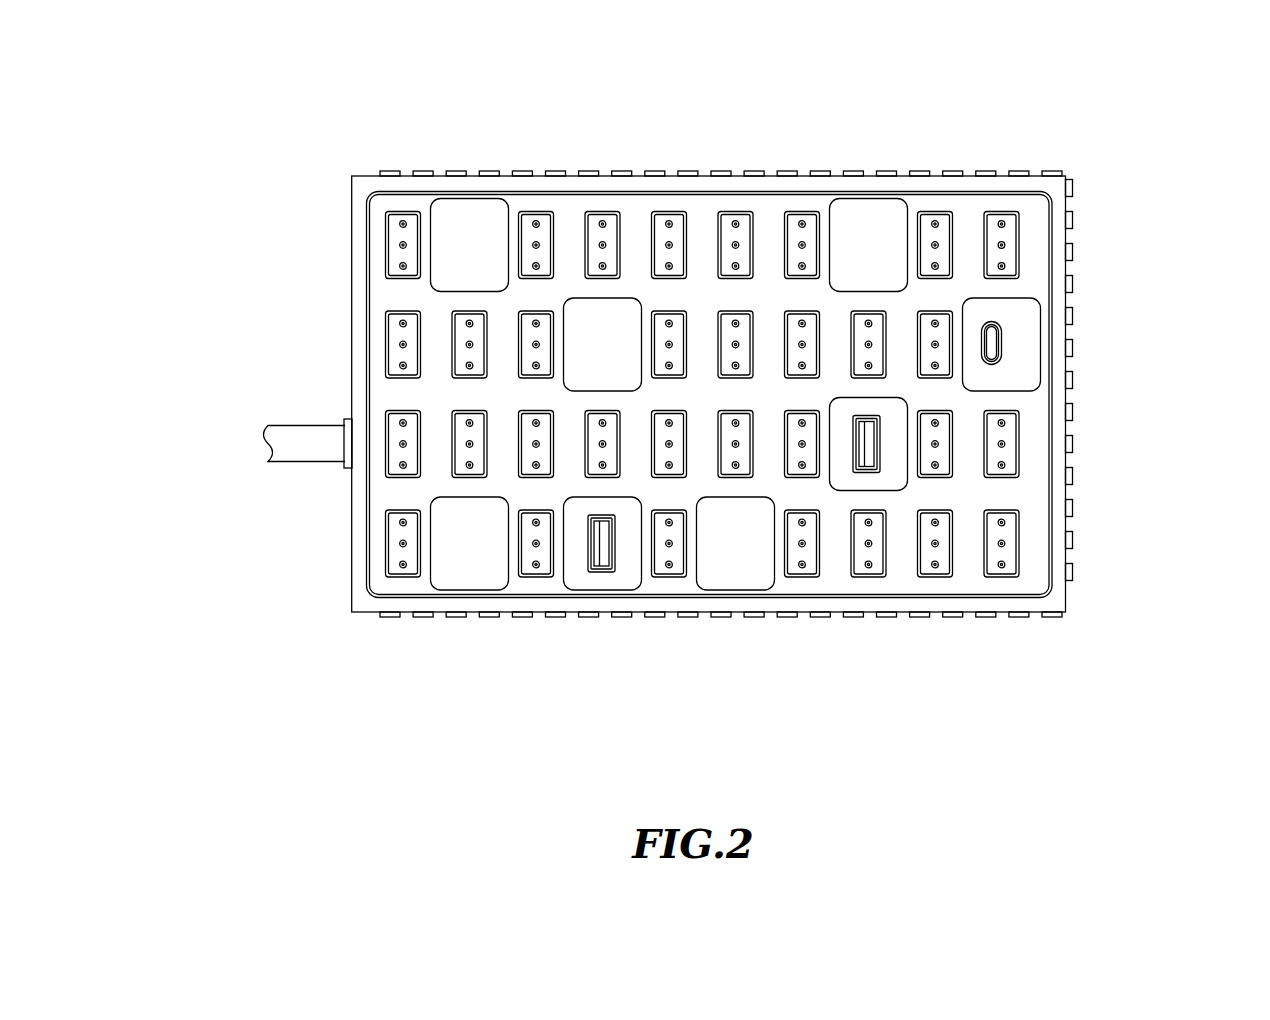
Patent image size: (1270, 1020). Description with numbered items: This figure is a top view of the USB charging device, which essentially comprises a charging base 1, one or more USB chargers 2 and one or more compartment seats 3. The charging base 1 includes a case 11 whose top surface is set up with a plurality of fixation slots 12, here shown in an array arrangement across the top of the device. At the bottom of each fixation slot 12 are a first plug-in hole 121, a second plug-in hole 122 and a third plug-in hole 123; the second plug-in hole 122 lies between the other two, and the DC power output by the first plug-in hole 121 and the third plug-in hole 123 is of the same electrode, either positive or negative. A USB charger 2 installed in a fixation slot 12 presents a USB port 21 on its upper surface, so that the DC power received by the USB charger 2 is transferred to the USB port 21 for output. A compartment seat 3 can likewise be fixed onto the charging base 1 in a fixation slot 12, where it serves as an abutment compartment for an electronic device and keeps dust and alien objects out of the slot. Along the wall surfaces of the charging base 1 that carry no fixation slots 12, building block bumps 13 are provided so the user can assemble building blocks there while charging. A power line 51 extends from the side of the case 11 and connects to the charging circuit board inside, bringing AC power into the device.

The charging base 1 is at (904, 178).
The case 11 is at (1057, 569).
The fixation slot 12 is at (1000, 215).
The first plug-in hole 121 is at (1001, 225).
The second plug-in hole 122 is at (1001, 245).
The third plug-in hole 123 is at (1001, 265).
The building block bump 13 is at (748, 170).
The USB charger 2 is at (1020, 393).
The USB port 21 is at (1002, 338).
The compartment seat 3 is at (472, 212).
The power line 51 is at (303, 425).